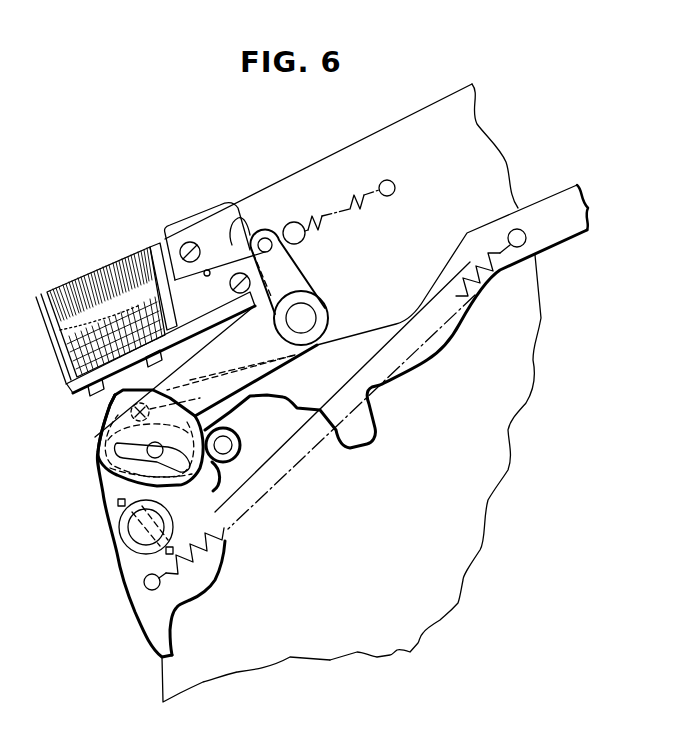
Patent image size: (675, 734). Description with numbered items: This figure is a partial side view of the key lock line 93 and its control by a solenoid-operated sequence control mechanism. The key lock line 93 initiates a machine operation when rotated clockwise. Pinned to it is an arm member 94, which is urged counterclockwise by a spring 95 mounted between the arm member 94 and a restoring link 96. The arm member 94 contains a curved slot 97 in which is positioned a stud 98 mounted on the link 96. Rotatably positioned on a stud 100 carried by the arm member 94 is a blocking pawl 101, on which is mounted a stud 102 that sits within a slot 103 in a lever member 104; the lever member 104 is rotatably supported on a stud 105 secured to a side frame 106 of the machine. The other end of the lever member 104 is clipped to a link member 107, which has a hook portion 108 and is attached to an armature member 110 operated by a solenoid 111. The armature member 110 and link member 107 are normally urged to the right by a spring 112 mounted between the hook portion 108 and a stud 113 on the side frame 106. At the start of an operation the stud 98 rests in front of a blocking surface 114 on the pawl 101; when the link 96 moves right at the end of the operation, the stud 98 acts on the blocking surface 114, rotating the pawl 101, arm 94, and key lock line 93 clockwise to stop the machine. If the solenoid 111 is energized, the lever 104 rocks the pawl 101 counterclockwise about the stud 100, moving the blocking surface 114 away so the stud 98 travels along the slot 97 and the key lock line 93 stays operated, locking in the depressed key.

The key lock line 93 is at (118, 528).
The arm member 94 is at (207, 584).
The spring 95 is at (222, 542).
The restoring link 96 is at (555, 229).
The curved slot 97 is at (240, 410).
The stud 98 is at (132, 409).
The stud 100 is at (228, 443).
The blocking pawl 101 is at (214, 484).
The stud 102 is at (117, 452).
The slot 103 is at (118, 476).
The lever member 104 is at (290, 270).
The stud 105 is at (310, 318).
The side frame 106 is at (465, 122).
The link member 107 is at (232, 236).
The hook portion 108 is at (291, 222).
The armature member 110 is at (162, 247).
The solenoid 111 is at (90, 287).
The spring 112 is at (321, 208).
The stud 113 is at (395, 187).
The blocking surface 114 is at (140, 423).